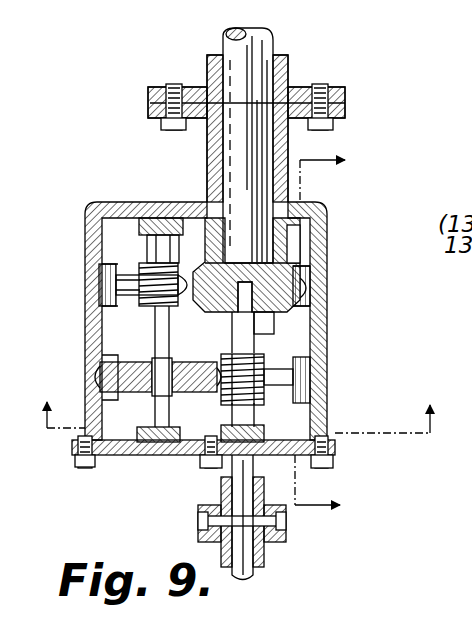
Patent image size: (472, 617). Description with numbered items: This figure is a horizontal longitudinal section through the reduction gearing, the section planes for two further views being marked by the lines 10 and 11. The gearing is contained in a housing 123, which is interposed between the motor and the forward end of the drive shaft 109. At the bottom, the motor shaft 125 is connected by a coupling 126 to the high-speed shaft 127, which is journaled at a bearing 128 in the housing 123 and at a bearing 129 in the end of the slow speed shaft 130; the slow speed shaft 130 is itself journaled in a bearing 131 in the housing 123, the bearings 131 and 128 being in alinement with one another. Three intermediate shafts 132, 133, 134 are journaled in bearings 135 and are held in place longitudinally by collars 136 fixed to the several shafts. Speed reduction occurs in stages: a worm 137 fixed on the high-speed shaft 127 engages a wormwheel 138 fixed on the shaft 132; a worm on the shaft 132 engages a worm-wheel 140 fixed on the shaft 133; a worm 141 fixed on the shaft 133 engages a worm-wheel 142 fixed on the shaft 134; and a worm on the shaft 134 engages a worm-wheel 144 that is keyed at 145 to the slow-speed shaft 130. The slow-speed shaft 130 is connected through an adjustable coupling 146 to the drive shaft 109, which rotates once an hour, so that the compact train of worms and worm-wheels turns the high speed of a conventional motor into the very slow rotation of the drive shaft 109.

The drive shaft 109 is at (258, 48).
The adjustable coupling 146 is at (348, 118).
The slow speed shaft 130 is at (246, 190).
The bearing 131 is at (268, 206).
The key 145 is at (293, 257).
The worm-wheel 144 is at (303, 265).
The bearings 135 is at (99, 282).
The collars 136 is at (140, 224).
The housing 123 is at (318, 334).
The intermediate shaft 132 is at (312, 360).
The wormwheel 138 is at (258, 336).
The worm 137 is at (252, 406).
The bearing 129 is at (240, 328).
The worm-wheel 142 is at (156, 250).
The worm 141 is at (160, 307).
The intermediate shaft 134 is at (115, 336).
The worm-wheel 140 is at (105, 364).
The intermediate shaft 133 is at (153, 408).
The bearing 128 is at (207, 466).
The high-speed shaft 127 is at (240, 484).
The coupling 126 is at (288, 538).
The motor shaft 125 is at (253, 578).
The section line 10- 10 is at (245, 405).
The section line 11- 11 is at (339, 335).